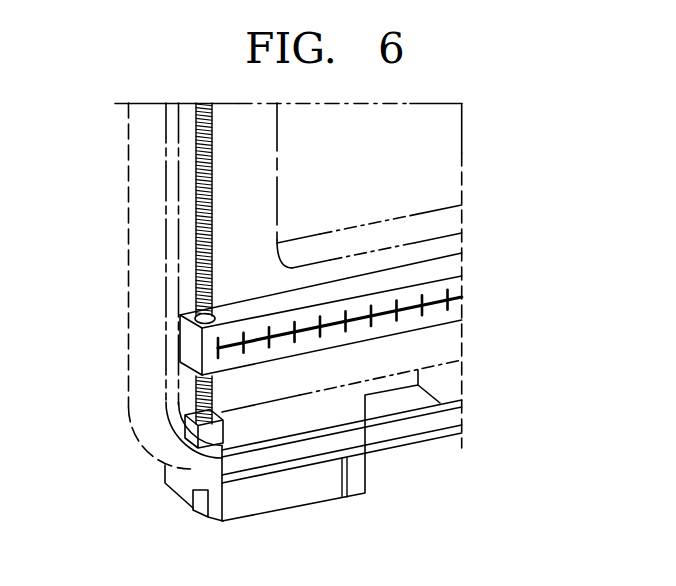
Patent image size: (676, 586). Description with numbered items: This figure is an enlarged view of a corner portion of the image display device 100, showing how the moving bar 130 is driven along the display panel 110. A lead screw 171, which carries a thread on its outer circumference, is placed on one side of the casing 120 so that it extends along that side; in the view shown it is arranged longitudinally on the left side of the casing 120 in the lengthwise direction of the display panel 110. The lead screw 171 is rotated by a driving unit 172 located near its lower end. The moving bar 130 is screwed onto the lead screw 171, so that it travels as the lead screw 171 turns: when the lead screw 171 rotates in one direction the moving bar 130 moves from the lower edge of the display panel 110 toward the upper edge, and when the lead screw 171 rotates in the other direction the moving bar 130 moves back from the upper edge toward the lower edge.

The image display device 100 is at (478, 135).
The display panel 110 is at (452, 167).
The casing 120 is at (137, 257).
The moving bar 130 is at (450, 285).
The lead screw 171 is at (196, 175).
The driving unit 172 is at (287, 498).